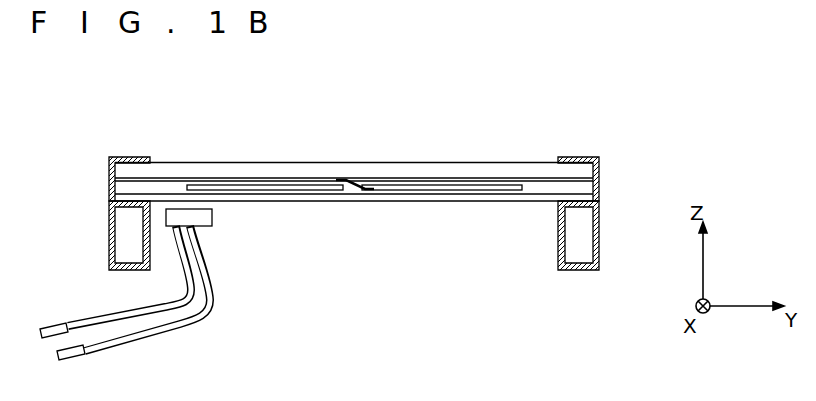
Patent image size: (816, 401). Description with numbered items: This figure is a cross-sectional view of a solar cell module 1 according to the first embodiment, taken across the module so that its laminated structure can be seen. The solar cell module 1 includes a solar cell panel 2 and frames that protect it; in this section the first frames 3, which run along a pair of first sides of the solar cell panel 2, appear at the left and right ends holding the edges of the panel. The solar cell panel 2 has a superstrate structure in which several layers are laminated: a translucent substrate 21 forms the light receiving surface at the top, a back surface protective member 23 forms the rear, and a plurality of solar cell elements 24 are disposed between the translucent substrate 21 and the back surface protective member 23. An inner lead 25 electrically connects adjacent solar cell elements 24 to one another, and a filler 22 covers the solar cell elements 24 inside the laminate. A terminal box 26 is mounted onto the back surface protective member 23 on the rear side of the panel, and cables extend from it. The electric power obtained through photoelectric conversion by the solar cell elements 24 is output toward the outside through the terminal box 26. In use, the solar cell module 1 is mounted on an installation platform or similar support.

The solar cell module 1 is at (115, 136).
The solar cell panel 2 is at (403, 141).
The first frame 3 is at (110, 242).
The translucent substrate 21 is at (535, 167).
The filler 22 is at (176, 179).
The back surface protective member 23 is at (509, 203).
The solar cell element 24 is at (262, 191).
The inner lead 25 is at (356, 192).
The terminal box 26 is at (208, 224).